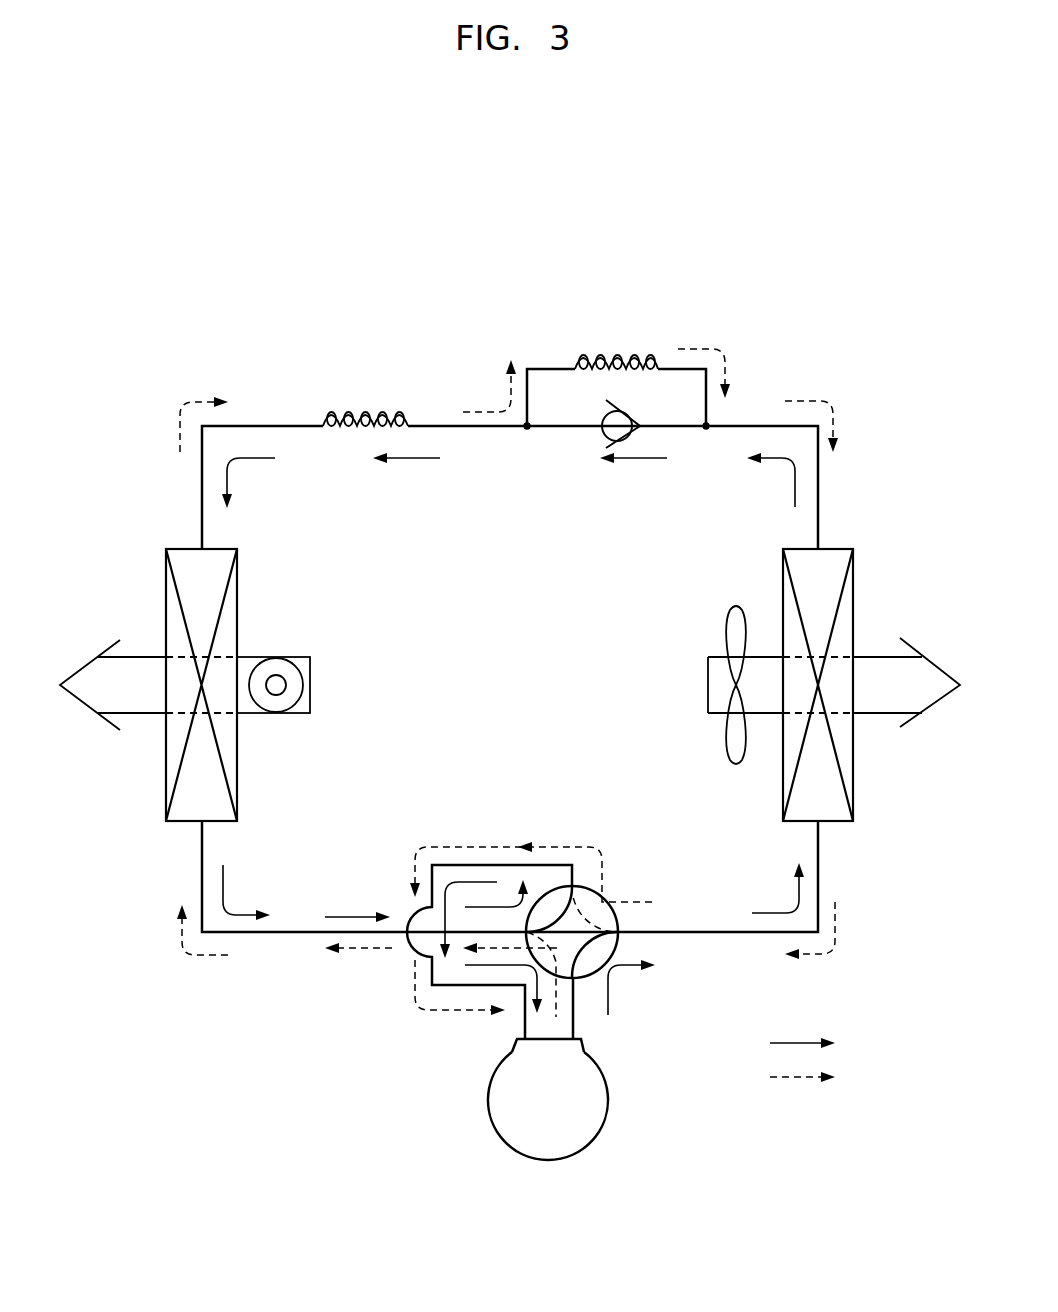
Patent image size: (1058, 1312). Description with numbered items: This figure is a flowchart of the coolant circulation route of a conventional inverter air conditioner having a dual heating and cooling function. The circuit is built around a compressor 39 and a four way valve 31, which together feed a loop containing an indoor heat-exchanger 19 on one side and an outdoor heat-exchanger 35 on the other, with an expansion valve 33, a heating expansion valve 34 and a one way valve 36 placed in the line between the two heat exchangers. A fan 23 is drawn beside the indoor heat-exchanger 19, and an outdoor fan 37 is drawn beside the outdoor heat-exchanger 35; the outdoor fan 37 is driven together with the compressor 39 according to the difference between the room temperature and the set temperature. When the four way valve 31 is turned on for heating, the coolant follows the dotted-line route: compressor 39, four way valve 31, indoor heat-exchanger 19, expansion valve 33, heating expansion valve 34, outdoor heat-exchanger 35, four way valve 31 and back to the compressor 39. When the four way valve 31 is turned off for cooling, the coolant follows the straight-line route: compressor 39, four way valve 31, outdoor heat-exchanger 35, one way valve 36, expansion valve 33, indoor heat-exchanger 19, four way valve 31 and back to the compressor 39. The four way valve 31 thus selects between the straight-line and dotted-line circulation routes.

The indoor heat-exchanger 19 is at (237, 573).
The indoor fan 23 is at (310, 672).
The four way valve 31 is at (617, 917).
The expansion valve 33 is at (360, 412).
The heating expansion valve 34 is at (613, 355).
The outdoor heat-exchanger 35 is at (853, 575).
The one way valve 36 is at (603, 430).
The outdoor fan 37 is at (732, 617).
The compressor 39 is at (608, 1100).